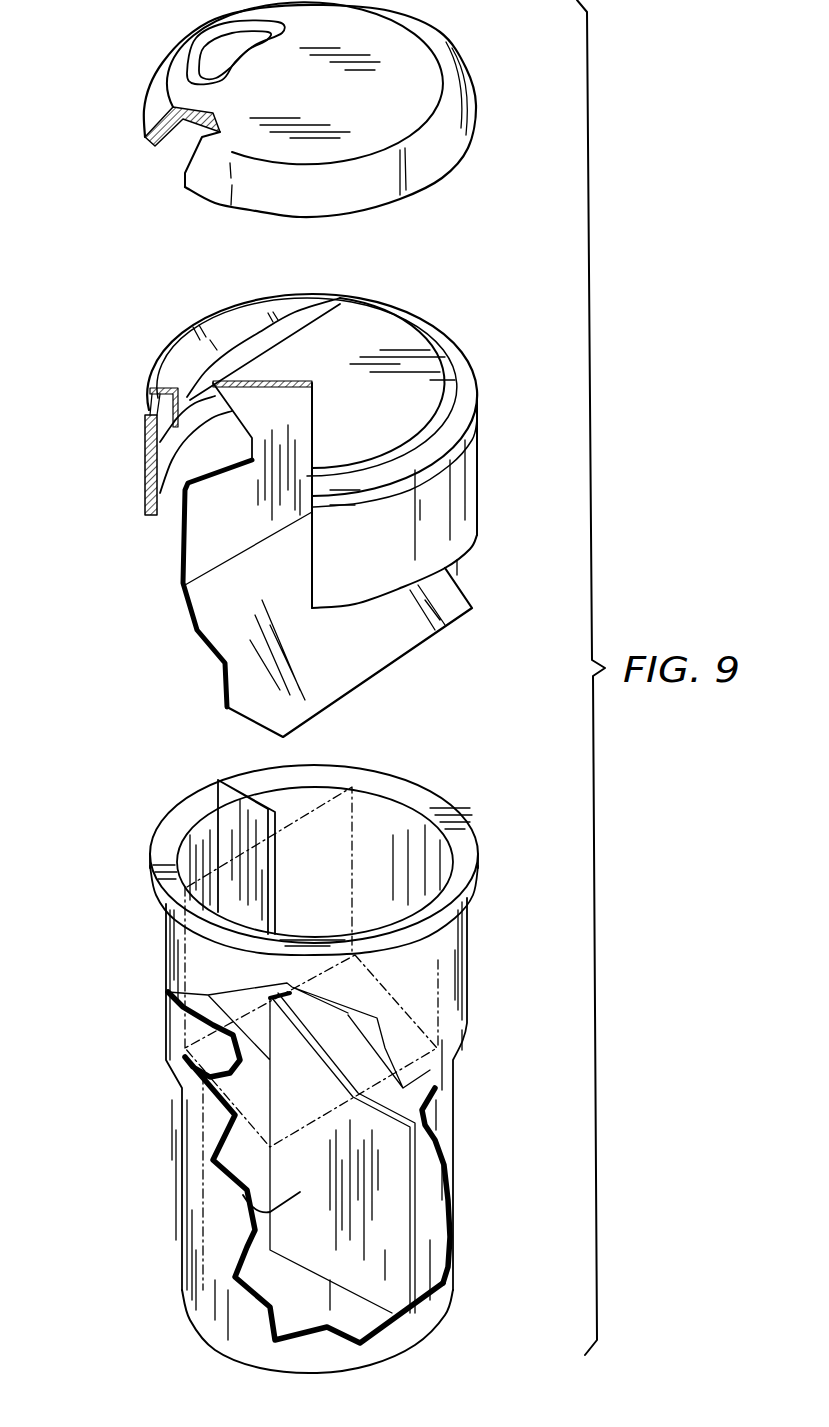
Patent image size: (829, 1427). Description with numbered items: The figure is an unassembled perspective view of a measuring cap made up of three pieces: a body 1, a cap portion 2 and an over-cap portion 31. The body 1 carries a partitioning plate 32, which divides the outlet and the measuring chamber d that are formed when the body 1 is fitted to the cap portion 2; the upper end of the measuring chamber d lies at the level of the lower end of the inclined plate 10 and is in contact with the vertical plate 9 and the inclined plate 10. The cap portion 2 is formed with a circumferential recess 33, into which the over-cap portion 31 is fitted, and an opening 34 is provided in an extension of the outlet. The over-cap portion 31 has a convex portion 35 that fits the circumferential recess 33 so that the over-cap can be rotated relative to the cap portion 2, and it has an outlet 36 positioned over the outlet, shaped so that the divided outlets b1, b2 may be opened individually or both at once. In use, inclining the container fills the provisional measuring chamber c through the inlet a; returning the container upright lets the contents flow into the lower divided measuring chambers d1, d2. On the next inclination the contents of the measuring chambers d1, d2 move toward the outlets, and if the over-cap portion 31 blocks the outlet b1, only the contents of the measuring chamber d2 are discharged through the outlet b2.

The body 1 is at (477, 1123).
The cap portion 2 is at (486, 492).
The vertical plate 9 is at (193, 548).
The inclined plate 10 is at (403, 640).
The over-cap portion 31 is at (482, 108).
The partitioning plate 32 is at (243, 1195).
The circumferential recess 33 is at (170, 393).
The opening 34 is at (250, 350).
The convex portion 35 is at (150, 143).
The outlet 36 is at (220, 70).
The inlet a is at (452, 1063).
The outlet b1 is at (292, 798).
The outlet b2 is at (180, 845).
The provisional measuring chamber c is at (438, 858).
The measuring chamber d is at (395, 1297).
The measuring chamber d1 is at (442, 1208).
The measuring chamber d2 is at (293, 1239).